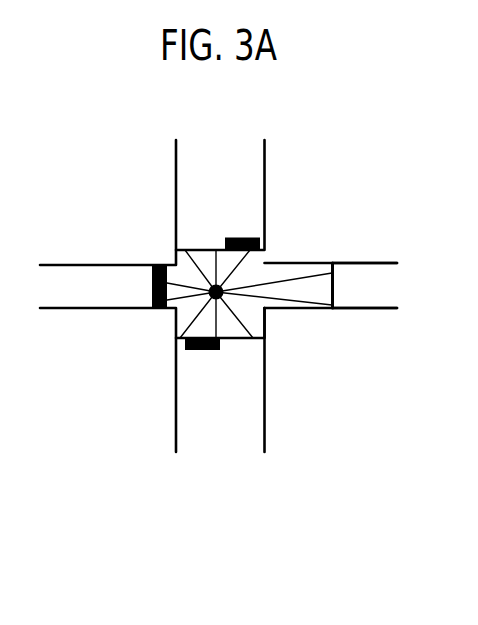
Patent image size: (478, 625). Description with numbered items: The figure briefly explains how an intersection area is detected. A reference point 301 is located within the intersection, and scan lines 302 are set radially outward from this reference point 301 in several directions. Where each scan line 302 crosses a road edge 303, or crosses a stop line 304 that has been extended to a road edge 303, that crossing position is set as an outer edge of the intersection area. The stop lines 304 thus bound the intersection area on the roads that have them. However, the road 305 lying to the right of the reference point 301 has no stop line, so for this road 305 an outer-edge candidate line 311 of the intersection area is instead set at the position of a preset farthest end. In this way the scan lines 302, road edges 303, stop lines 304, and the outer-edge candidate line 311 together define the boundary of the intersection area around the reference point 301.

The reference point 301 is at (187, 306).
The scan lines 302 is at (292, 276).
The road edge 303 is at (322, 309).
The stop line 304 is at (212, 352).
The road 305 is at (402, 264).
The outer-edge candidate line 311 is at (334, 287).